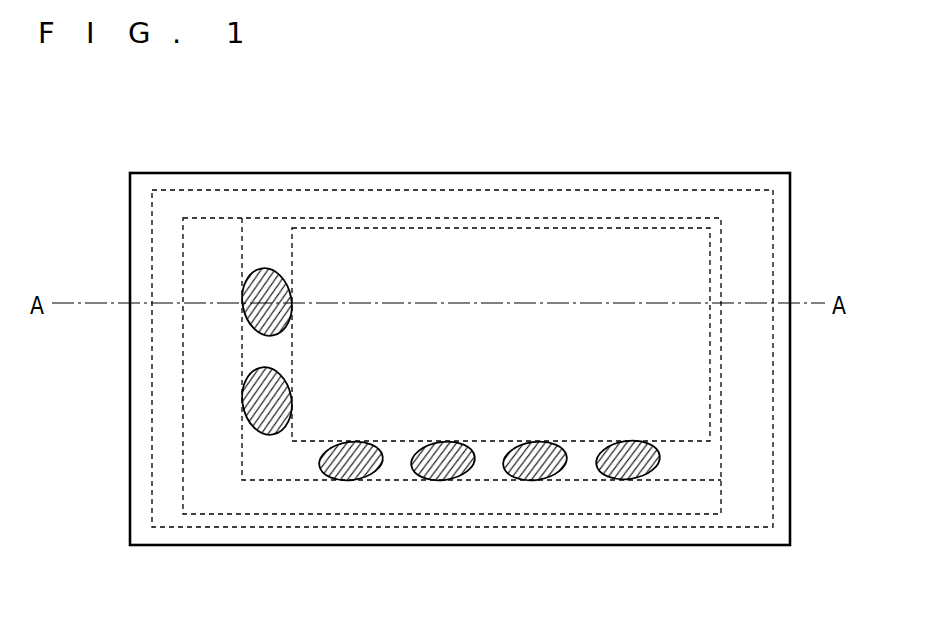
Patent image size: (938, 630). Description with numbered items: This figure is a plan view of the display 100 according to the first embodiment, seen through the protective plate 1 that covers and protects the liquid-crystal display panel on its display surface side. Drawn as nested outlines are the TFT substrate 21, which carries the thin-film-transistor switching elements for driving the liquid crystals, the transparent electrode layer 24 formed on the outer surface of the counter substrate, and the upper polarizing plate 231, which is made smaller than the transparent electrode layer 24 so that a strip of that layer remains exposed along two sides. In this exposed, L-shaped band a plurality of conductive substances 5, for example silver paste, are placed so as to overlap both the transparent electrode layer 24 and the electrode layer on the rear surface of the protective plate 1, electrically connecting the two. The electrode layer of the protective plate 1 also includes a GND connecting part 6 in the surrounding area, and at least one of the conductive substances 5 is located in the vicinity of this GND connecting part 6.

The protective plate 1 is at (629, 208).
The conductive substances 5 is at (243, 320).
The GND connecting part 6 is at (147, 401).
The TFT substrate 21 is at (212, 245).
The transparent electrode layer 24 is at (268, 245).
The display 100 is at (572, 546).
The upper polarizing plate 231 is at (355, 250).